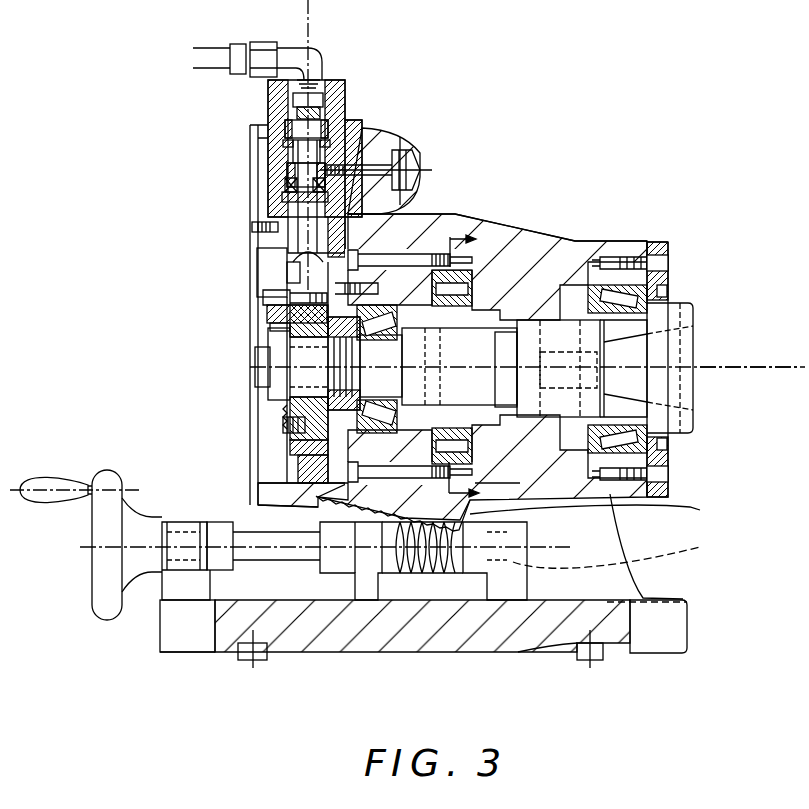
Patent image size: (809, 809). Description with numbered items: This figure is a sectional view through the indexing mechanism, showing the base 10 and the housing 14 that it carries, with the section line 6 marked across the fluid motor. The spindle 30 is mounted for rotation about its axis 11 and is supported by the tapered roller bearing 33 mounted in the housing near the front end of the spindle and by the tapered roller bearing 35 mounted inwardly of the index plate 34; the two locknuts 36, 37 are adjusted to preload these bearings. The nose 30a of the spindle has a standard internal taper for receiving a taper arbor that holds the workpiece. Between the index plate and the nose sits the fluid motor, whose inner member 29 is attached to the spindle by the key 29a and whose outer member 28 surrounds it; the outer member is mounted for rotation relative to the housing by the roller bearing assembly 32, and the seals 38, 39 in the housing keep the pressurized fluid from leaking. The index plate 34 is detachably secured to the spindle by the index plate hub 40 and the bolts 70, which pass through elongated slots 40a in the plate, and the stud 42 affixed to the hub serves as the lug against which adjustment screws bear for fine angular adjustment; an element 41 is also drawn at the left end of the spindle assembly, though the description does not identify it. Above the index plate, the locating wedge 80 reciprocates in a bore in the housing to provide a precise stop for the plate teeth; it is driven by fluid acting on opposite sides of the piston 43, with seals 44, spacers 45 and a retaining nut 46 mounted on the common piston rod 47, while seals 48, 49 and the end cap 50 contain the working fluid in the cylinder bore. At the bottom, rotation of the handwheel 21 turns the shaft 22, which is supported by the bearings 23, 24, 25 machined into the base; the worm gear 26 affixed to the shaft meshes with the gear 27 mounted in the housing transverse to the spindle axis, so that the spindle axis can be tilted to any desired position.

The base 10 is at (400, 652).
The spindle axis 11 is at (710, 370).
The housing 14 is at (395, 200).
The handwheel 21 is at (110, 620).
The shaft 22 is at (292, 560).
The bearing 23 is at (178, 565).
The bearing 24 is at (333, 560).
The bearing 25 is at (700, 551).
The worm gear 26 is at (423, 555).
The gear 27 is at (700, 510).
The outer member of fluid motor 28 is at (475, 290).
The inner member of fluid motor 29 is at (500, 317).
The key 29a is at (568, 315).
The spindle 30 is at (627, 323).
The nose of spindle 30a is at (693, 303).
The roller bearing assembly 32 is at (440, 265).
The tapered roller bearing 33 is at (662, 270).
The index plate 34 is at (300, 473).
The tapered roller bearing 35 is at (290, 266).
The locknut 36 is at (270, 318).
The locknut 37 is at (272, 328).
The seal 38 is at (435, 490).
The seal 39 is at (607, 287).
The index plate hub 40 is at (277, 403).
The elongated slots 40a is at (290, 450).
The pin 41 is at (257, 367).
The stud 42 is at (263, 305).
The piston 43 is at (320, 137).
The seals 44 is at (273, 157).
The spacers 45 is at (292, 110).
The retaining nut 46 is at (325, 103).
The piston rod 47 is at (318, 116).
The seal 48 is at (277, 187).
The seal 49 is at (337, 80).
The end cap 50 is at (268, 82).
The bolts 70 is at (282, 425).
The locating wedge 80 is at (252, 231).
The section line 6- 6 is at (470, 366).